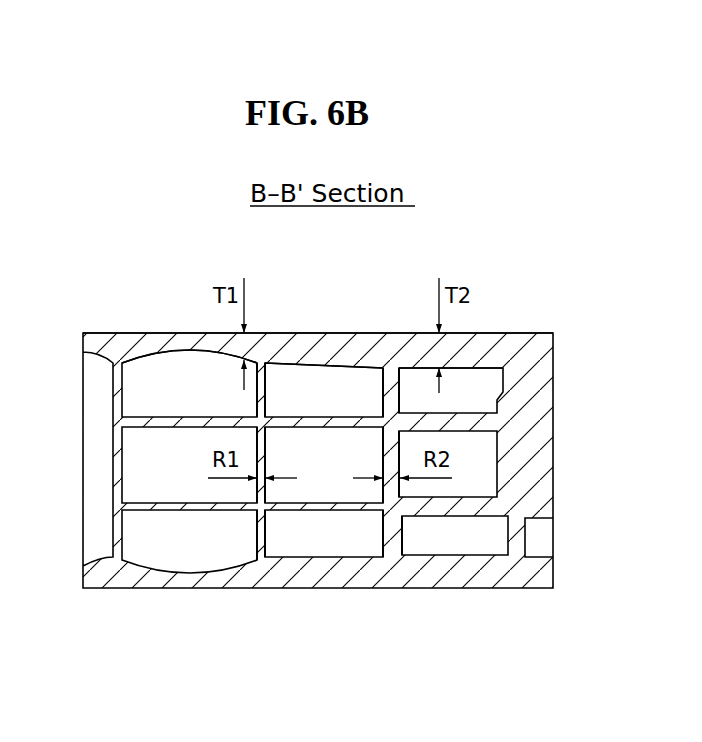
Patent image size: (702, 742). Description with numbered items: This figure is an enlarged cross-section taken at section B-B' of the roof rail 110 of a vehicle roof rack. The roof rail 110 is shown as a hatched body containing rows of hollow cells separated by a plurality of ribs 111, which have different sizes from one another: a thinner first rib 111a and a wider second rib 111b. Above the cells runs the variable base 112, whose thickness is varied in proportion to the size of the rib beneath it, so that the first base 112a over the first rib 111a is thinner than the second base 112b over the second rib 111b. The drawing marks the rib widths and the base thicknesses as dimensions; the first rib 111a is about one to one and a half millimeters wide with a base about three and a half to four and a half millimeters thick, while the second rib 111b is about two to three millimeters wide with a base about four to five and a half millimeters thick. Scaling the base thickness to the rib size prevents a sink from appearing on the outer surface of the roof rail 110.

The roof rail 110 is at (128, 297).
The variable base 112 is at (378, 266).
The first base 112a is at (263, 338).
The second base 112b is at (420, 348).
The ribs 111 is at (317, 652).
The first rib 111a is at (263, 488).
The second rib 111b is at (390, 483).